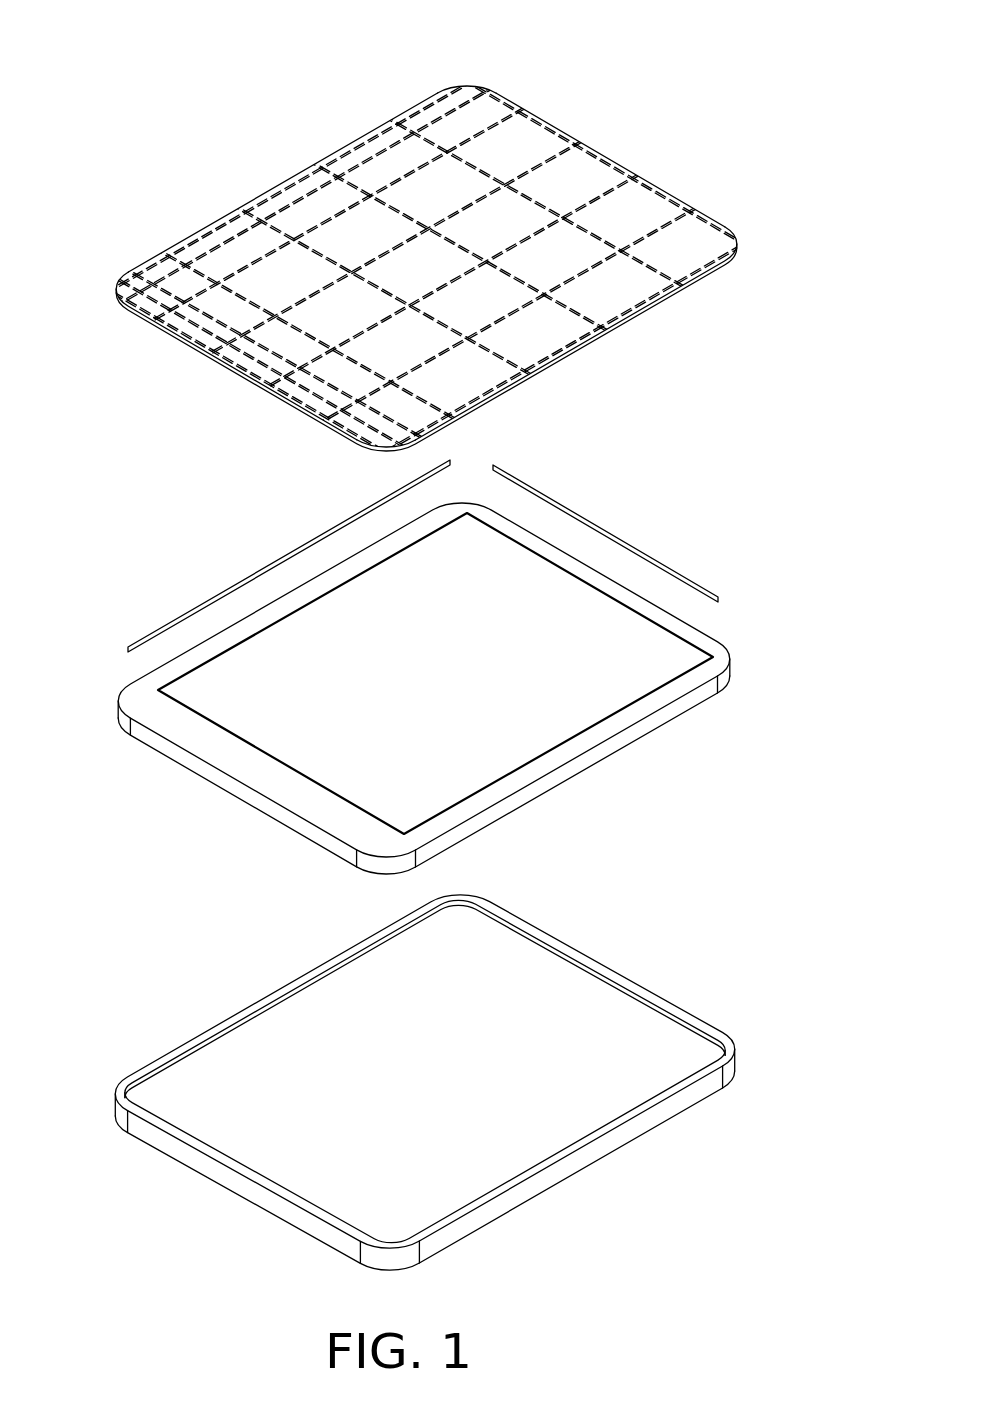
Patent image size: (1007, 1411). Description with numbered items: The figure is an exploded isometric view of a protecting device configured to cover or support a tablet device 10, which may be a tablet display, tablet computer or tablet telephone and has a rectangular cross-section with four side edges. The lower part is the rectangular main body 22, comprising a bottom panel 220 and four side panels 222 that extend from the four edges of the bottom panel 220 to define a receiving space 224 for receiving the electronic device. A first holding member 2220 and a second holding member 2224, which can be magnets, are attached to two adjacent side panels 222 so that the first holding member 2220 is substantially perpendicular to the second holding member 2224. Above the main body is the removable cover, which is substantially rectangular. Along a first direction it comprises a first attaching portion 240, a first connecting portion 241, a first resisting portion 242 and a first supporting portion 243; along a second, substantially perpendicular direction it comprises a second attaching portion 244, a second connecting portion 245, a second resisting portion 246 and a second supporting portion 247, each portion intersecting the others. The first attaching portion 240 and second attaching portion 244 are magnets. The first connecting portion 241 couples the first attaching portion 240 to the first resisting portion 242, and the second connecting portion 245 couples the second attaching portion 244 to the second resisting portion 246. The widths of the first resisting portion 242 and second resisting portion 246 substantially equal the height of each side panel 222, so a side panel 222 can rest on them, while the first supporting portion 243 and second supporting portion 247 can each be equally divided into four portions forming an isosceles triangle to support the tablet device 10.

The tablet device 10 is at (712, 643).
The main body 22 is at (410, 1096).
The bottom panel 220 is at (430, 1107).
The side panels 222 is at (210, 1163).
The receiving space 224 is at (228, 1092).
The first holding member 2220 is at (587, 520).
The second holding member 2224 is at (235, 587).
The first attaching portion 240 is at (183, 330).
The first connecting portion 241 is at (380, 422).
The first resisting portion 242 is at (417, 418).
The first supporting portion 243 is at (735, 252).
The second attaching portion 244 is at (210, 230).
The second connecting portion 245 is at (468, 91).
The second resisting portion 246 is at (492, 112).
The second supporting portion 247 is at (752, 237).